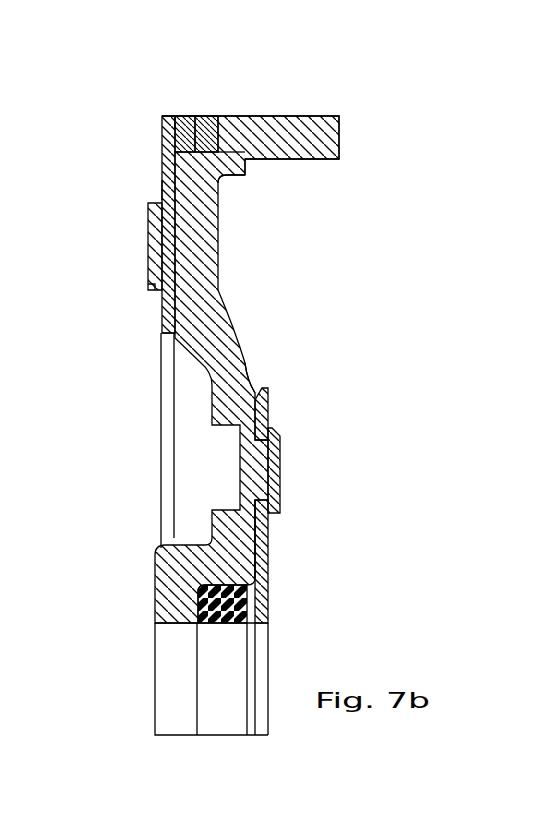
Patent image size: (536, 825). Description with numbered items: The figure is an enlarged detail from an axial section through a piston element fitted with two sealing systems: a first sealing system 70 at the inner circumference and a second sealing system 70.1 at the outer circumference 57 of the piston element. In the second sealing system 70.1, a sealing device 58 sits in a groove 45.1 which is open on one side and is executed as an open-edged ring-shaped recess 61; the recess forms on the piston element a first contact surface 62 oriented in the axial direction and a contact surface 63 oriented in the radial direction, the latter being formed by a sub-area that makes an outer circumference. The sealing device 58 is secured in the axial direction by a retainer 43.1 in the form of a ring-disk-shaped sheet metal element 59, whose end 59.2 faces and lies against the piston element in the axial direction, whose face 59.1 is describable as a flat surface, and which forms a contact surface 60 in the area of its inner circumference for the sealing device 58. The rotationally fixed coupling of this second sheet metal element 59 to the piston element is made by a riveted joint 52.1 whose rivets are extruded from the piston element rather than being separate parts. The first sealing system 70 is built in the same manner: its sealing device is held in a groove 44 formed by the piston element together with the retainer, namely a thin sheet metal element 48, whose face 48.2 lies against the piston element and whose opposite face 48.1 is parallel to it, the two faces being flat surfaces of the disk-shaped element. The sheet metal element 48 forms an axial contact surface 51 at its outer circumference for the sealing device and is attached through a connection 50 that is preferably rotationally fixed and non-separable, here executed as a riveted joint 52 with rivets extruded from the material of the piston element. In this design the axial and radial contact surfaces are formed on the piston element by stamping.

The second sealing system 70.1 is at (152, 105).
The contact surface 60 is at (165, 125).
The open-edged ring-shaped recess 61 is at (192, 116).
The sealing device 58 is at (214, 128).
The groove 45.1 is at (243, 135).
The outer circumference 57 is at (278, 112).
The retainer 43.1 is at (165, 157).
The sheet metal element 59 is at (95, 224).
The end of sheet metal element 59.2 is at (168, 188).
The riveted joint 52.1 is at (160, 255).
The face of sheet metal element 59.1 is at (162, 355).
The first contact surface 62 is at (245, 160).
The contact surface 63 is at (240, 178).
The sheet metal element 48 is at (260, 392).
The face of sheet metal element 48.2 is at (264, 412).
The connection 50 is at (285, 445).
The riveted joint 52 is at (265, 478).
The axial contact surface 51 is at (270, 543).
The first sealing system 70 is at (286, 560).
The groove 44 is at (262, 588).
The face of sheet metal element 48.1 is at (272, 614).